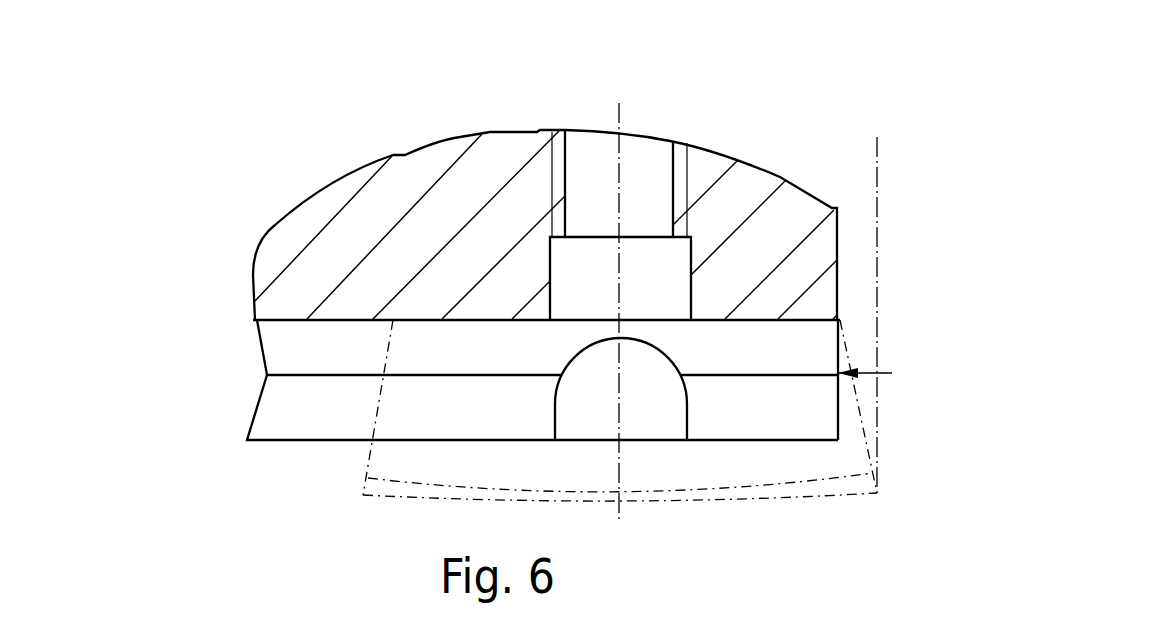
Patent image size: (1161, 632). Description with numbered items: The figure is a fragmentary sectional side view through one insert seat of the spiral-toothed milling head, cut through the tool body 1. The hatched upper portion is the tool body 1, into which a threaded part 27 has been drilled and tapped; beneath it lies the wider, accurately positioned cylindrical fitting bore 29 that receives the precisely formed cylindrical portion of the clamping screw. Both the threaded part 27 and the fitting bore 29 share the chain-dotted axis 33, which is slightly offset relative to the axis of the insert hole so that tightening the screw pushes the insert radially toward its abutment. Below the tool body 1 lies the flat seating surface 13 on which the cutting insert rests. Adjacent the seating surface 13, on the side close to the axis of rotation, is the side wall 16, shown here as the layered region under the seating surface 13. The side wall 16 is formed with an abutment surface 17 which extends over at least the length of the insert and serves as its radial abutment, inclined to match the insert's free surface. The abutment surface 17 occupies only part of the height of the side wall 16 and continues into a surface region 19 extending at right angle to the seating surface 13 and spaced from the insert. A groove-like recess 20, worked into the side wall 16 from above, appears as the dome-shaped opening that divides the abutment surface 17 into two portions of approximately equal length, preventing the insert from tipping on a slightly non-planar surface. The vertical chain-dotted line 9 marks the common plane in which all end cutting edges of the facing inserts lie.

The tool body 1 is at (745, 188).
The chain-dotted line 9 is at (877, 155).
The seating surface 13 is at (437, 320).
The side wall 16 is at (880, 372).
The abutment surface 17 is at (337, 415).
The surface region 19 is at (287, 350).
The groove-like recess 20 is at (672, 420).
The threaded part 27 is at (647, 165).
The fitting bore 29 is at (678, 272).
The axis 33 is at (620, 105).